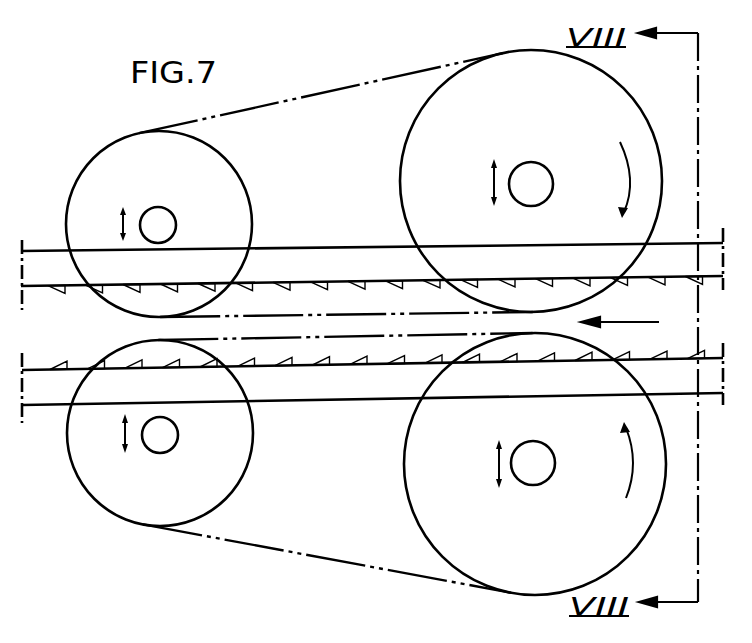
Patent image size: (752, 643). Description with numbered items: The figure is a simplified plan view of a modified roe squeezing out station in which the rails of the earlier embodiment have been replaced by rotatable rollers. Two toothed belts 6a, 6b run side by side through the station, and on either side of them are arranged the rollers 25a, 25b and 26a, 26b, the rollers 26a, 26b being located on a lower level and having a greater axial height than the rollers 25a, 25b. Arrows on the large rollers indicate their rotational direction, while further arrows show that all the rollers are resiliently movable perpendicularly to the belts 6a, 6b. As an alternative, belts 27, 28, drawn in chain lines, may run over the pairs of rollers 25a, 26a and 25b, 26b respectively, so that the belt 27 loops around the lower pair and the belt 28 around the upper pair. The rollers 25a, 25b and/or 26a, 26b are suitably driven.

The belt 6a is at (360, 392).
The belt 6b is at (349, 258).
The rotatable roller 25a is at (412, 478).
The rotatable roller 25b is at (423, 137).
The rotatable roller 26a is at (243, 464).
The rotatable roller 26b is at (234, 180).
The belt 27 is at (244, 537).
The belt 28 is at (262, 106).